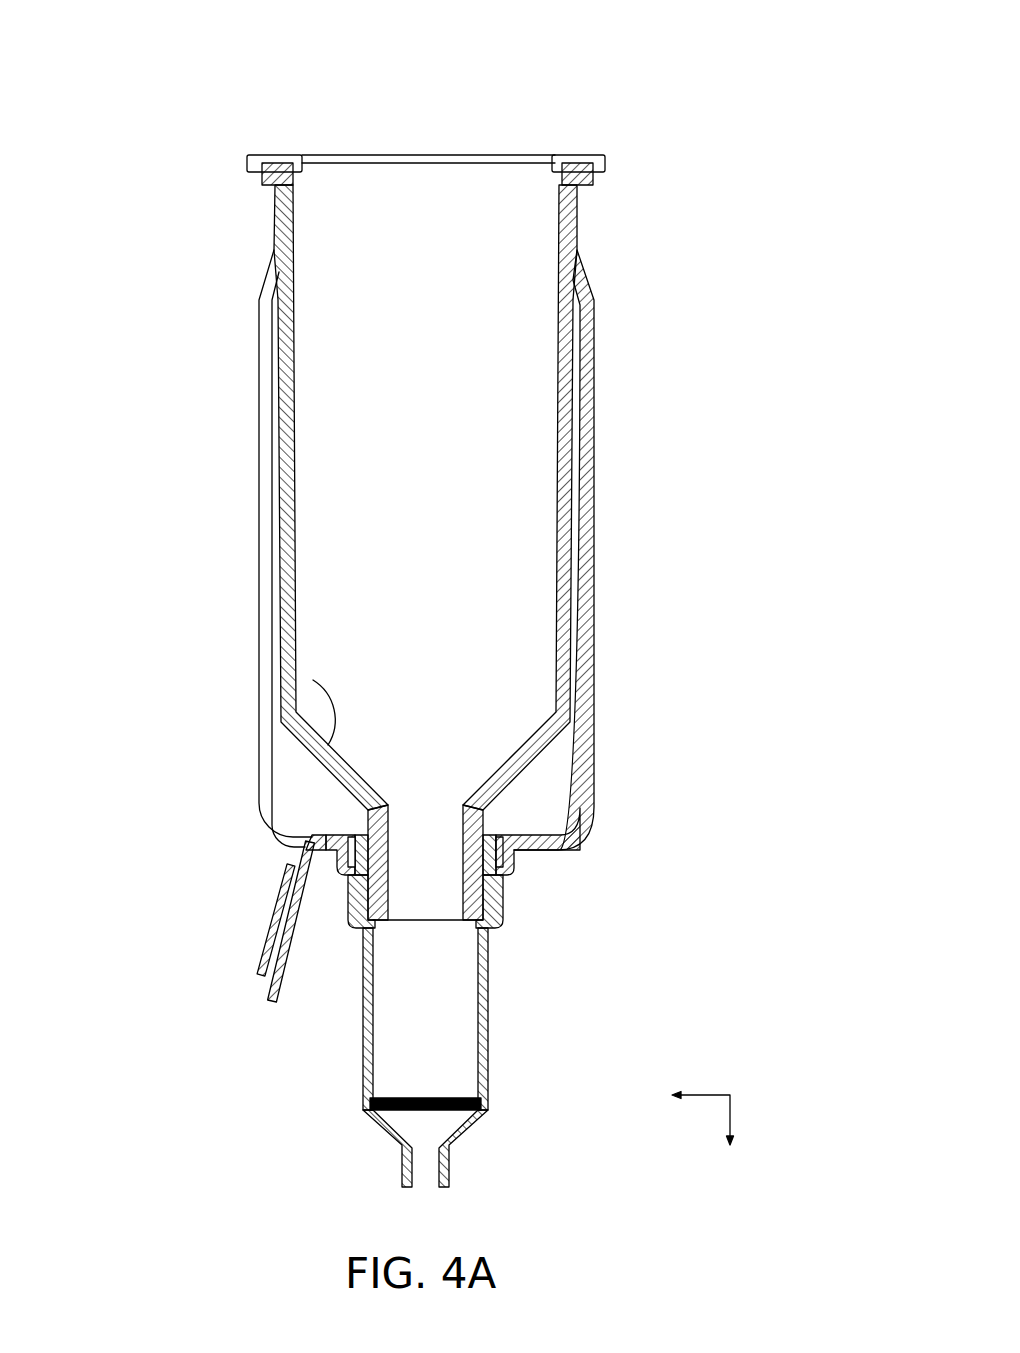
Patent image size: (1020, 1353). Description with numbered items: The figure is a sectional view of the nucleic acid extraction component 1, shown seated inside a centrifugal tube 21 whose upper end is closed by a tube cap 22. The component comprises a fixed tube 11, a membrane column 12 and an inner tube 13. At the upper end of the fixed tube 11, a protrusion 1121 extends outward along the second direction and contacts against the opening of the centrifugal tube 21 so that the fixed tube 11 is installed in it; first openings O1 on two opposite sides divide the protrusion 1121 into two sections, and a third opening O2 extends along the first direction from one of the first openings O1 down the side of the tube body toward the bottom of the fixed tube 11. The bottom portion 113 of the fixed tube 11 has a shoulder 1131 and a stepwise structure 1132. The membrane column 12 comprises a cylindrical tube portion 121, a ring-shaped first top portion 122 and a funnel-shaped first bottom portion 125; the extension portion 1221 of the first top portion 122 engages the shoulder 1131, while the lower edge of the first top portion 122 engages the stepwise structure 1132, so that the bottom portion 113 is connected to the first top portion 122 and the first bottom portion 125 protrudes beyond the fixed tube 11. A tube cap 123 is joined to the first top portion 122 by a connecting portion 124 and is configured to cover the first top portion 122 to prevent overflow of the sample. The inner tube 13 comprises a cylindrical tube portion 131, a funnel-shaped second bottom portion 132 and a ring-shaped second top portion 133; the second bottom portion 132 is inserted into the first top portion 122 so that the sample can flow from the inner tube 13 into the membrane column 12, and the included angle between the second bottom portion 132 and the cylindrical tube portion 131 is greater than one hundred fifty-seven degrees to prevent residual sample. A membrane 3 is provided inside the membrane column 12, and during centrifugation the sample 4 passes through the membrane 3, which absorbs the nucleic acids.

The nucleic acid extraction component 1 is at (622, 54).
The fixed tube 11 is at (459, 520).
The protrusion 1121 is at (256, 160).
The bottom portion 113 is at (547, 884).
The shoulder 1131 is at (558, 848).
The stepwise structure 1132 is at (498, 902).
The membrane column 12 is at (468, 997).
The cylindrical tube portion 121 is at (490, 965).
The first top portion 122 is at (521, 864).
The extension portion 1221 is at (508, 838).
The tube cap 123 is at (285, 898).
The connecting portion 124 is at (310, 860).
The first bottom portion 125 is at (466, 1128).
The inner tube 13 is at (427, 541).
The cylindrical tube portion 131 is at (287, 632).
The second bottom portion 132 is at (336, 747).
The second top portion 133 is at (590, 181).
The centrifugal tube 21 is at (247, 488).
The tube cap 22 is at (205, 181).
The membrane 3 is at (482, 1100).
The sample 4 is at (522, 640).
The first openings O1 is at (262, 281).
The third opening O2 is at (270, 568).